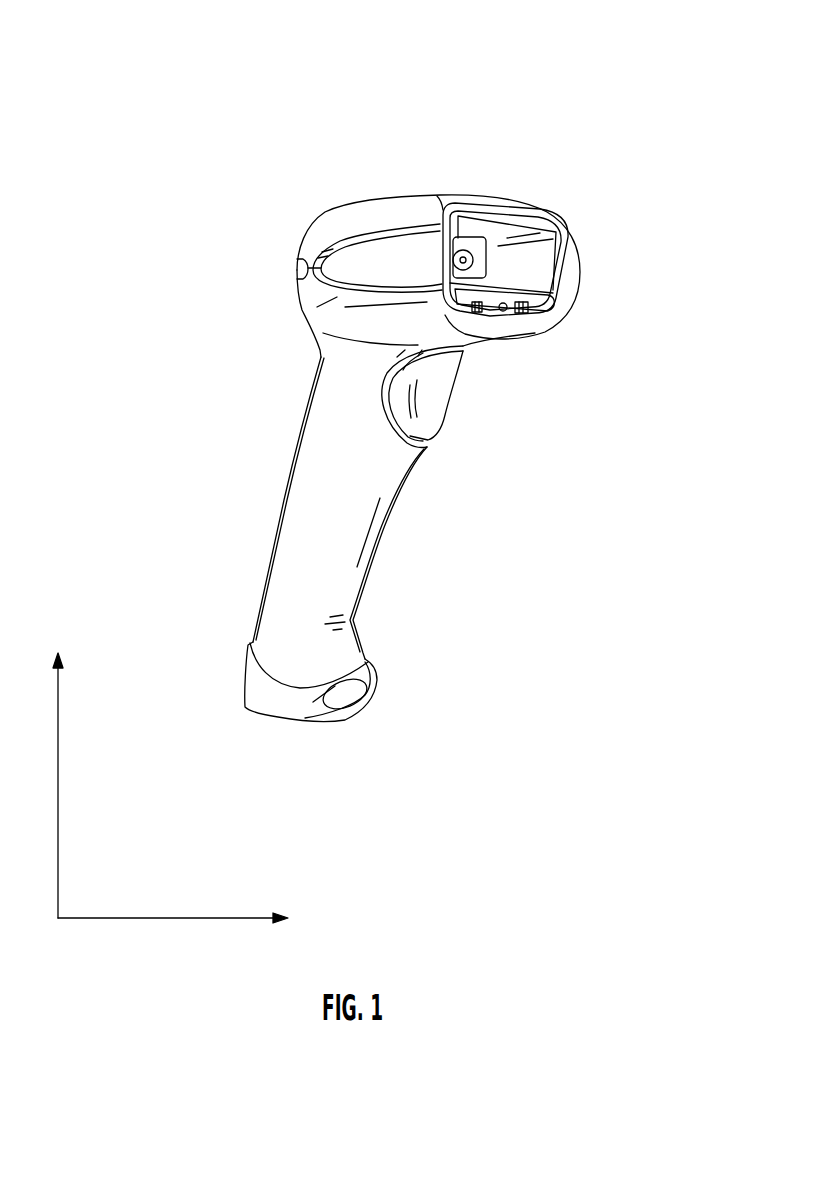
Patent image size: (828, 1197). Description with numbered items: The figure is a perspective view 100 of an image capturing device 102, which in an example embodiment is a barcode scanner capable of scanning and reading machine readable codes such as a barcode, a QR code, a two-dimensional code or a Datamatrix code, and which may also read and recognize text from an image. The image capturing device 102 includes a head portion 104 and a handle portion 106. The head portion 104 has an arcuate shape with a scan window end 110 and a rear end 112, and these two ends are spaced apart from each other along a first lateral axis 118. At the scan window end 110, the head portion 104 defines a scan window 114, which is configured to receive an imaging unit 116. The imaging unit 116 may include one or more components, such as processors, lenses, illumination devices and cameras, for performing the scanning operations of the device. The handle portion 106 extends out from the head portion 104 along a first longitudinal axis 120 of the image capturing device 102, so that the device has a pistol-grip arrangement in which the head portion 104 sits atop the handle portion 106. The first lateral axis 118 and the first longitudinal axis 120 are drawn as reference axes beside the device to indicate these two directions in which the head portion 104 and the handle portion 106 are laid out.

The perspective view 100 is at (302, 89).
The image capturing device 102 is at (310, 228).
The head portion 104 is at (500, 195).
The handle portion 106 is at (288, 468).
The scan window end 110 is at (583, 266).
The rear end 112 is at (298, 268).
The scan window 114 is at (570, 238).
The imaging unit 116 is at (486, 258).
The first lateral axis 118 is at (263, 918).
The first longitudinal axis 120 is at (58, 738).